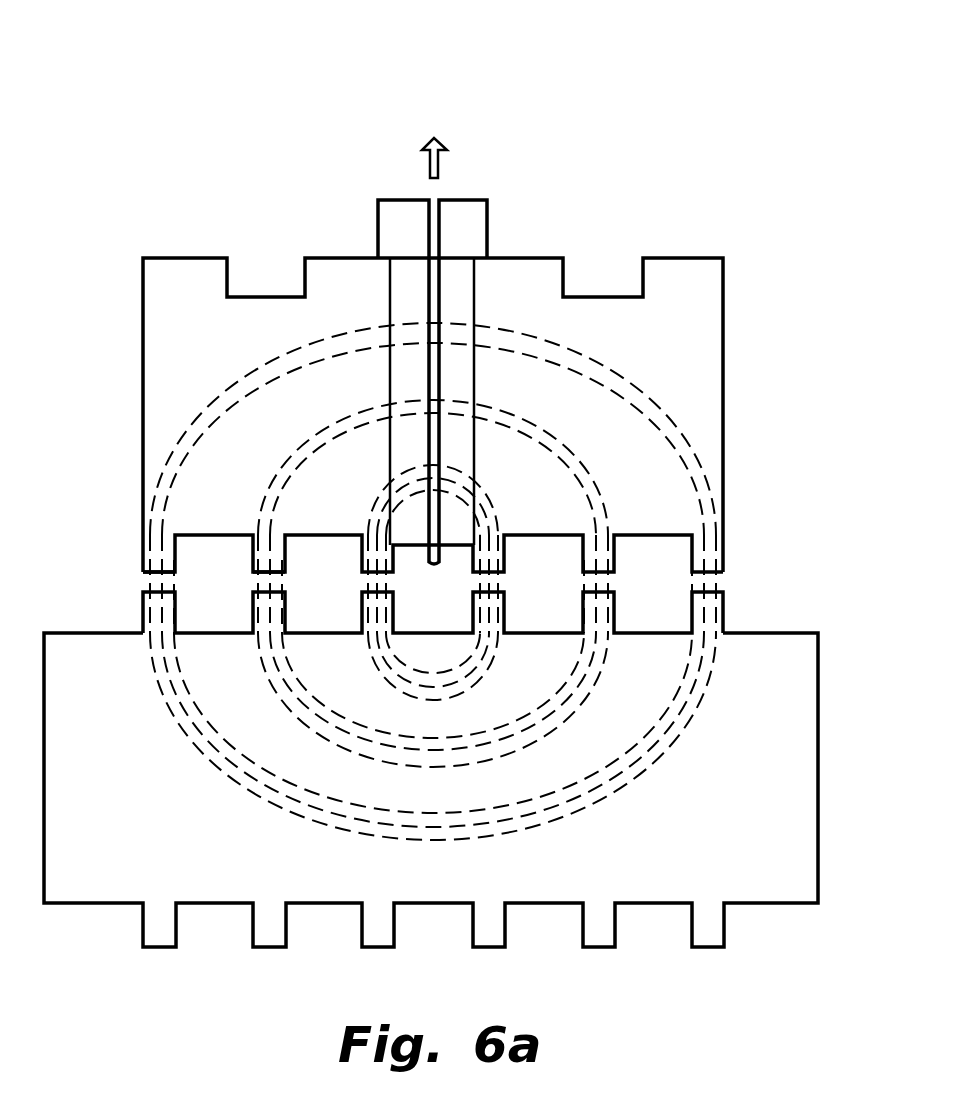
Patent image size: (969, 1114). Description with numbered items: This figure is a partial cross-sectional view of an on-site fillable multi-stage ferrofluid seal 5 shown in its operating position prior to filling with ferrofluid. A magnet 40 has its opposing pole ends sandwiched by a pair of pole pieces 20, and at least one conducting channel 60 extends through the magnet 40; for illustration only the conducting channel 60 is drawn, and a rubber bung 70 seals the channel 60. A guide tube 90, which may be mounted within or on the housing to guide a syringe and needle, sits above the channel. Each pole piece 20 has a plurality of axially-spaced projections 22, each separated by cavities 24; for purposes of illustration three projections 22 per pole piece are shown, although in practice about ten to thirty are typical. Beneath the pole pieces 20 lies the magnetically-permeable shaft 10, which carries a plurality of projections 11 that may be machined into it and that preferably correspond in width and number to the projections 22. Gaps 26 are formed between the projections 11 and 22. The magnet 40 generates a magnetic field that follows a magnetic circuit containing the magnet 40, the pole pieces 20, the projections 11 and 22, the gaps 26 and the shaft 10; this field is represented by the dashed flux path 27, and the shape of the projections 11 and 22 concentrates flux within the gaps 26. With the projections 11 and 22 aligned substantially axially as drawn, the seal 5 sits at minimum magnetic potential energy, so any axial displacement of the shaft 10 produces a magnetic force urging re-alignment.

The multi-stage seal 5 is at (190, 192).
The shaft 10 is at (808, 725).
The projections 11 is at (607, 602).
The pole pieces 20 is at (152, 345).
The projections 22 is at (610, 534).
The cavities 24 is at (559, 568).
The gaps 26 is at (257, 580).
The flux path 27 is at (654, 385).
The magnet 40 is at (470, 300).
The conducting channel 60 is at (433, 295).
The rubber bung 70 is at (436, 136).
The guide tube 90 is at (478, 226).